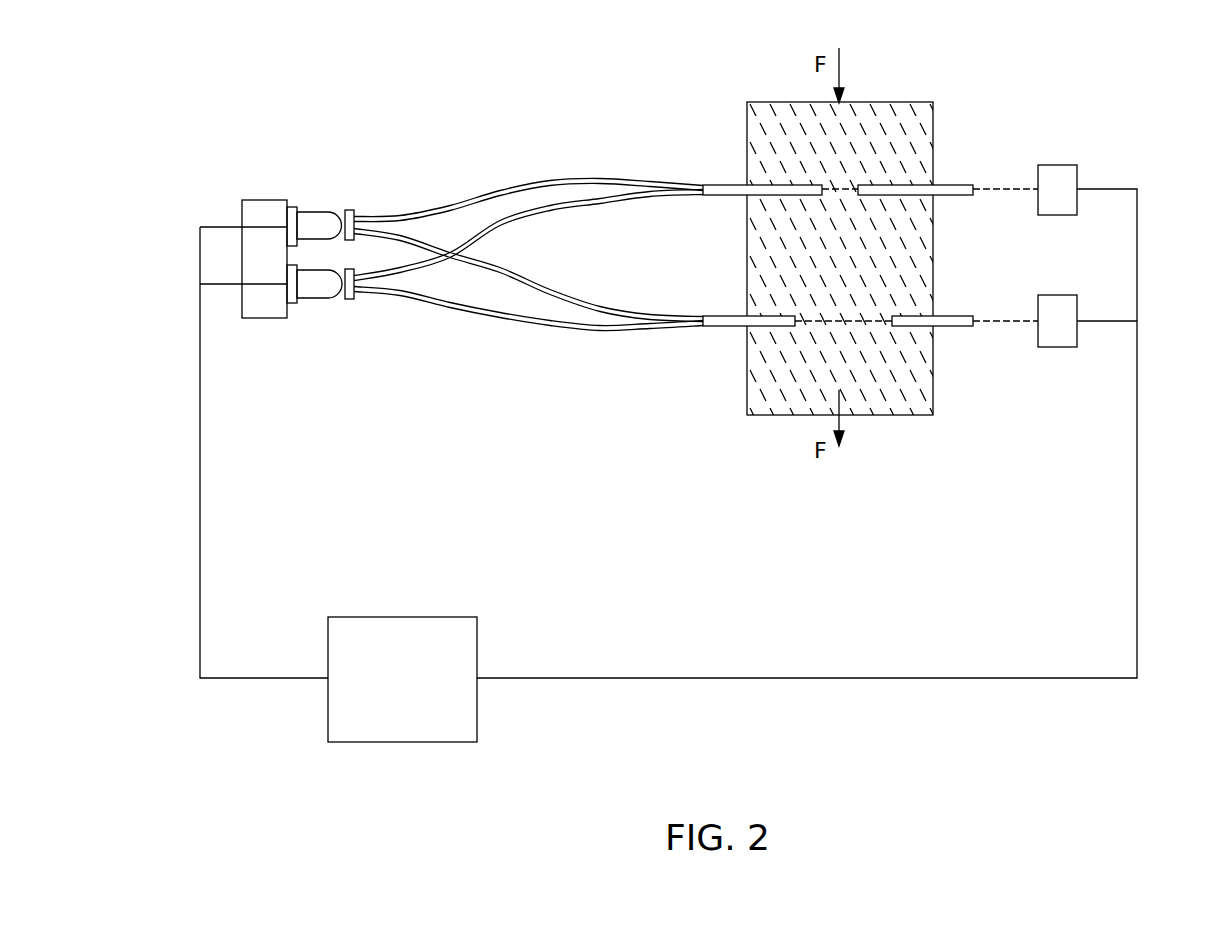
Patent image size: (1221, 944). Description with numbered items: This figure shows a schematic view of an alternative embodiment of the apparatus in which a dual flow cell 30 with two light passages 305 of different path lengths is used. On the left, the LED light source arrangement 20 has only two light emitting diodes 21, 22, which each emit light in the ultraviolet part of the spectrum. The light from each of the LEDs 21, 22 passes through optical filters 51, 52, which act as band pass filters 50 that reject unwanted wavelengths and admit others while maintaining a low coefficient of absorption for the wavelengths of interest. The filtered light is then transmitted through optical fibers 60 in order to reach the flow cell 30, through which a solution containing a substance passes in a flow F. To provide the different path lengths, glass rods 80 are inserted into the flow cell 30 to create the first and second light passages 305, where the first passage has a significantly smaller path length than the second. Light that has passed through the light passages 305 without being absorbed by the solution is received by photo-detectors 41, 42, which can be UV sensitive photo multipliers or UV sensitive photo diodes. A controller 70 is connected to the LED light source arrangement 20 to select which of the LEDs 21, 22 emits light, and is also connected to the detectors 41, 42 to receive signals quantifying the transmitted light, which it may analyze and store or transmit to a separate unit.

The LED light source arrangement 20 is at (284, 184).
The light emitting diode 21 is at (310, 225).
The light emitting diode 22 is at (310, 292).
The band pass filter 50 is at (385, 247).
The optical filter 51 is at (350, 233).
The optical filter 52 is at (352, 290).
The optical fibers 60 is at (550, 163).
The glass rods 80 is at (743, 188).
The light passage 305 is at (838, 183).
The dual flow cell 30 is at (907, 132).
The photo-detector 41 is at (1057, 175).
The photo-detector 42 is at (1057, 307).
The controller 70 is at (395, 727).